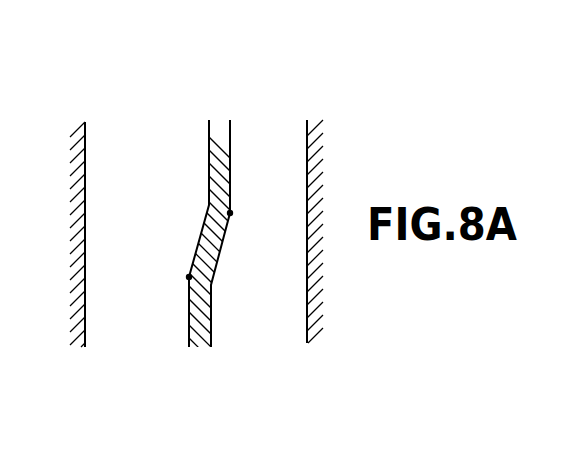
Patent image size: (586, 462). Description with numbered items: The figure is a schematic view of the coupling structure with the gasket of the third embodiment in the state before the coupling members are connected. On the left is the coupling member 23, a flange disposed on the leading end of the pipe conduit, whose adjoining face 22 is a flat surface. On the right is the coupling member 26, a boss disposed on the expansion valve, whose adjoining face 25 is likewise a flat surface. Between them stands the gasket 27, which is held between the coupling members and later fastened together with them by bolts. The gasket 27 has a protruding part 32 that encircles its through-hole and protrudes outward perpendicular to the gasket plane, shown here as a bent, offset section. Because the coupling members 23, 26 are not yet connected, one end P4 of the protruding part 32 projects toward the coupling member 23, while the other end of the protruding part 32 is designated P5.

The adjoining face 22 is at (86, 333).
The coupling member 23 is at (75, 120).
The adjoining face 25 is at (306, 305).
The coupling member 26 is at (311, 118).
The gasket 27 is at (214, 118).
The protruding part 32 is at (221, 246).
The one end of the protruding part P4 is at (172, 280).
The other end of the protruding part P5 is at (247, 214).